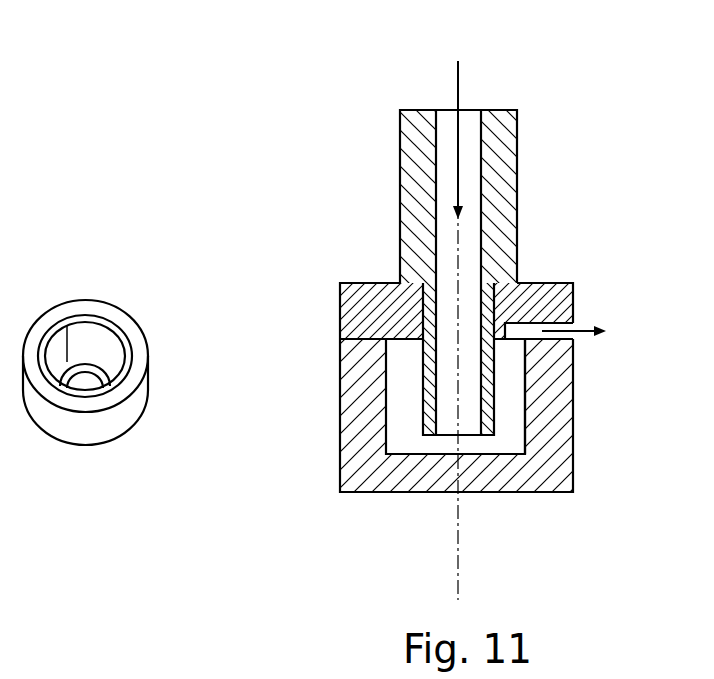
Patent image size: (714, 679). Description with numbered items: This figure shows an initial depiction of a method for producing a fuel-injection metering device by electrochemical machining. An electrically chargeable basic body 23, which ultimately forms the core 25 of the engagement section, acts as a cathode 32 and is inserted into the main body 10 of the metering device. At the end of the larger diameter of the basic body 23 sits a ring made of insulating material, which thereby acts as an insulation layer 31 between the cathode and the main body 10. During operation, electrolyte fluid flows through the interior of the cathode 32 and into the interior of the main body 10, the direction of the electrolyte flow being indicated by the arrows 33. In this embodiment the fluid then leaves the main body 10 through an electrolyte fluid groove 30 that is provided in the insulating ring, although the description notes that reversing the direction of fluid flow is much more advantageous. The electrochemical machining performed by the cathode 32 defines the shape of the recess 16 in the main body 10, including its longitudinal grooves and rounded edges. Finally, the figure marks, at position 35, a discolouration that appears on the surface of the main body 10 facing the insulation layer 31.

The main body 10 is at (322, 457).
The recess 16 is at (404, 445).
The basic body 23 is at (410, 204).
The core 25 is at (428, 381).
The electrolyte fluid groove 30 is at (573, 338).
The insulation layer 31 is at (357, 315).
The cathode 32 is at (456, 248).
The arrows 33 is at (460, 123).
The position of discolouration 35 is at (551, 362).